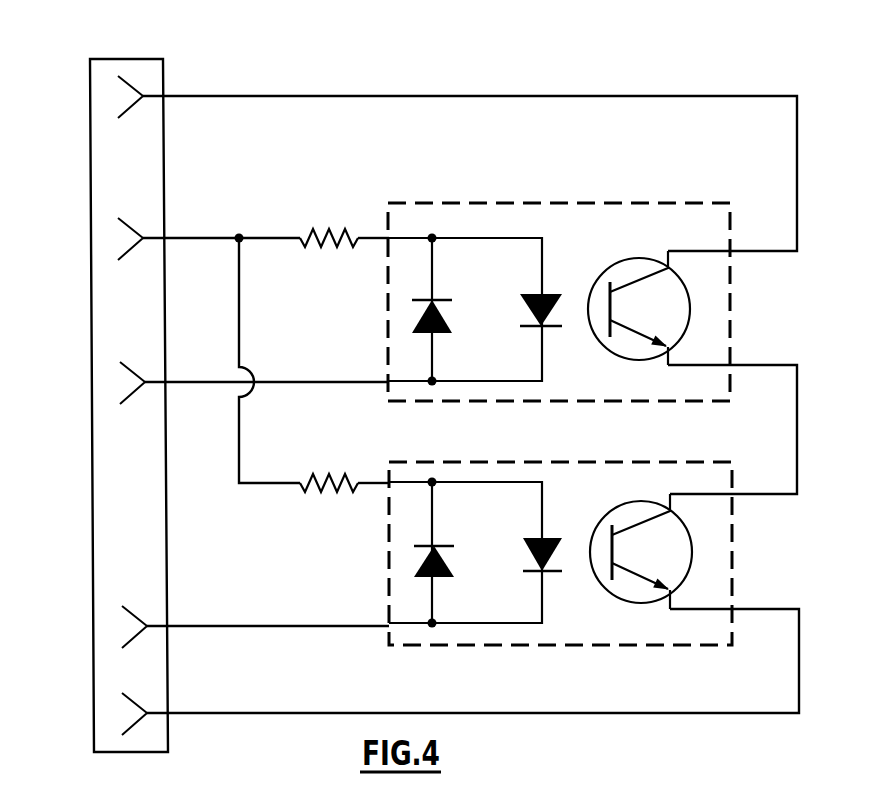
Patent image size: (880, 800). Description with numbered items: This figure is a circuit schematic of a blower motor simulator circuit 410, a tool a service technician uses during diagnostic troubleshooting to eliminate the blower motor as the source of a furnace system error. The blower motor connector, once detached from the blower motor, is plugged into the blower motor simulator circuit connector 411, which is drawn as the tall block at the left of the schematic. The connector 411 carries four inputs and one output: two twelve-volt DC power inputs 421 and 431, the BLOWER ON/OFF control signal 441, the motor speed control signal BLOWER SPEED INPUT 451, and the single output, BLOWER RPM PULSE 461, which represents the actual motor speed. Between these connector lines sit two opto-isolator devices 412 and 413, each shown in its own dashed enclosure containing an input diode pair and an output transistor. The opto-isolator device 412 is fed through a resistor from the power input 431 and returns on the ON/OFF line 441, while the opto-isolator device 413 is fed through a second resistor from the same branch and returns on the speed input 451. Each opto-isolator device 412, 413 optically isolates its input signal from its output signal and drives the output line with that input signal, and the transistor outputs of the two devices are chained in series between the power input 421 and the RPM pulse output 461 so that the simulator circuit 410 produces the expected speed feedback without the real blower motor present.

The blower motor simulator circuit 410 is at (562, 95).
The blower motor simulator circuit connector 411 is at (123, 58).
The opto-isolator device 412 is at (597, 200).
The opto-isolator device 413 is at (597, 459).
The 12 VDC POWER input 421 is at (128, 109).
The 12 VDC POWER input 431 is at (128, 251).
The BLOWER ON/OFF control signal 441 is at (130, 395).
The BLOWER SPEED INPUT 451 is at (132, 639).
The BLOWER RPM PULSE 461 is at (132, 726).